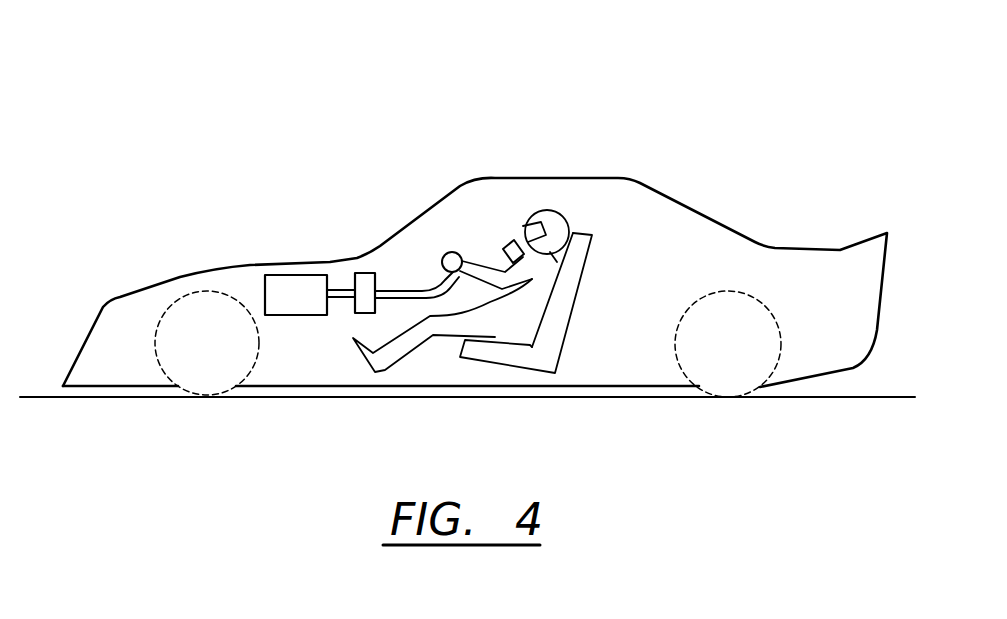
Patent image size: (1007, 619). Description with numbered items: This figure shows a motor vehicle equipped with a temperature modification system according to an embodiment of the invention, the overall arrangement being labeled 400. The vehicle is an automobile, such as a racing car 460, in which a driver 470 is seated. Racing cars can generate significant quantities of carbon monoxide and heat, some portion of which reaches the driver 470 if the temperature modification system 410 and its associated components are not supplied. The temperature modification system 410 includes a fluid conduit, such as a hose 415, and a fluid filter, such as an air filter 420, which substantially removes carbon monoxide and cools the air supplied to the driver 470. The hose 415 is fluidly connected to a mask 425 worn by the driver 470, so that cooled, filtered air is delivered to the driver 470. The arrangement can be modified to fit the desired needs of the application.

The personal cooling system in vehicle 400 is at (535, 38).
The temperature modification system 410 is at (287, 295).
The hose 415 is at (338, 290).
The air filter 420 is at (365, 282).
The mask 425 is at (505, 243).
The racing car 460 is at (687, 207).
The driver 470 is at (553, 225).